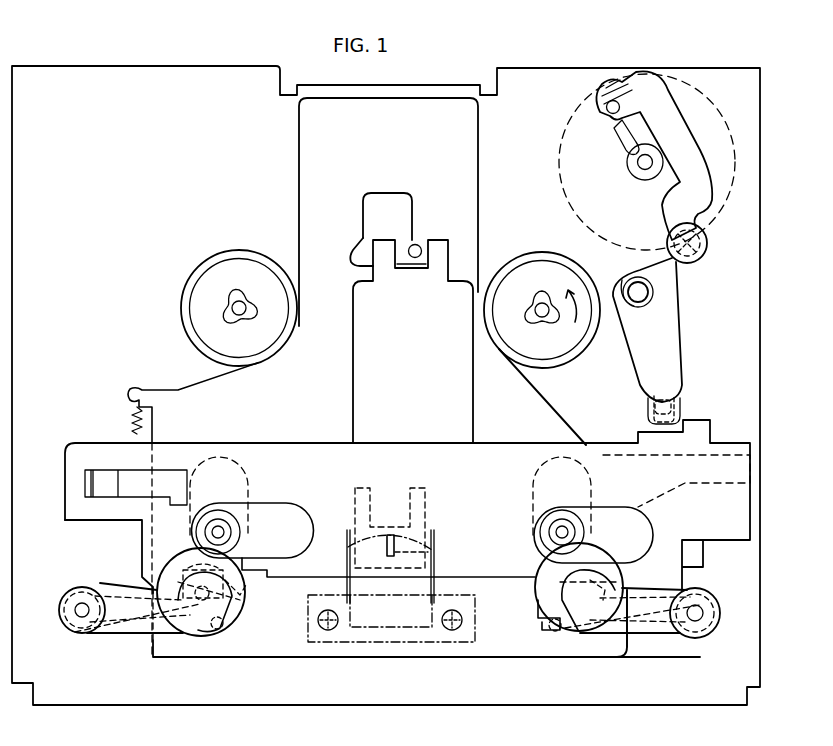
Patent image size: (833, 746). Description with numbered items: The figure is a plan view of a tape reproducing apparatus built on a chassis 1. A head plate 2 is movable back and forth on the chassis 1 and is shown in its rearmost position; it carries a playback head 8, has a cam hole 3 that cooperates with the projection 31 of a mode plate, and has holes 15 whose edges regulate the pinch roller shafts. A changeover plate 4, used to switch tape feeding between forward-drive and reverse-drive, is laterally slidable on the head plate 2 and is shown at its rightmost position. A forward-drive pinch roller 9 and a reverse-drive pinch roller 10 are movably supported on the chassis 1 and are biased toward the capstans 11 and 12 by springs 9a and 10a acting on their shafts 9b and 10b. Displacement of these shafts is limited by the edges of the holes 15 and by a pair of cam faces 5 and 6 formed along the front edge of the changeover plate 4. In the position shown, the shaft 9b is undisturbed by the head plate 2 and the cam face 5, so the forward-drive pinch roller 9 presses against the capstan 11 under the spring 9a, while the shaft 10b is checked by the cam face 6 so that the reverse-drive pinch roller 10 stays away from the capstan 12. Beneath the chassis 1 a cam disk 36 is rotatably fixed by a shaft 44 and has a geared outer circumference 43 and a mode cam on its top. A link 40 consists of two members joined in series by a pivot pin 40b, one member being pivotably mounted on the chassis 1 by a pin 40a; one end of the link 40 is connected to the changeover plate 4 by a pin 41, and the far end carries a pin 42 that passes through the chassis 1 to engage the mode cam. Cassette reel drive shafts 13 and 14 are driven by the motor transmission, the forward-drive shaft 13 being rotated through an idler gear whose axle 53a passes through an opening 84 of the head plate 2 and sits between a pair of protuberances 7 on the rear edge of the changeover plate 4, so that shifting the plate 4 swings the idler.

The chassis 1 is at (207, 80).
The head plate 2 is at (491, 658).
The cam hole 3 is at (426, 505).
The changeover plate 4 is at (285, 448).
The cam face 5 is at (604, 612).
The cam face 6 is at (240, 580).
The protuberances 7 is at (409, 244).
The playback head 8 is at (393, 628).
The forward-drive pinch roller 9 is at (545, 568).
The spring 9a is at (650, 628).
The shaft 9b is at (540, 588).
The reverse-drive pinch roller 10 is at (185, 562).
The spring 10a is at (125, 585).
The shaft 10b is at (199, 630).
The capstan 11 is at (553, 518).
The capstan 12 is at (226, 532).
The forward-drive cassette reel drive shaft 13 is at (546, 320).
The cassette reel drive shaft 14 is at (242, 296).
The holes 15 is at (220, 630).
The projection 31 is at (420, 549).
The cam disk 36 is at (700, 78).
The link 40 is at (690, 291).
The pin 40a is at (652, 300).
The pivot pin 40b is at (707, 246).
The pin 41 is at (645, 421).
The pin 42 is at (609, 114).
The geared outer circumference 43 is at (737, 178).
The shaft 44 is at (638, 170).
The axle 53a is at (421, 250).
The opening 84 is at (358, 246).